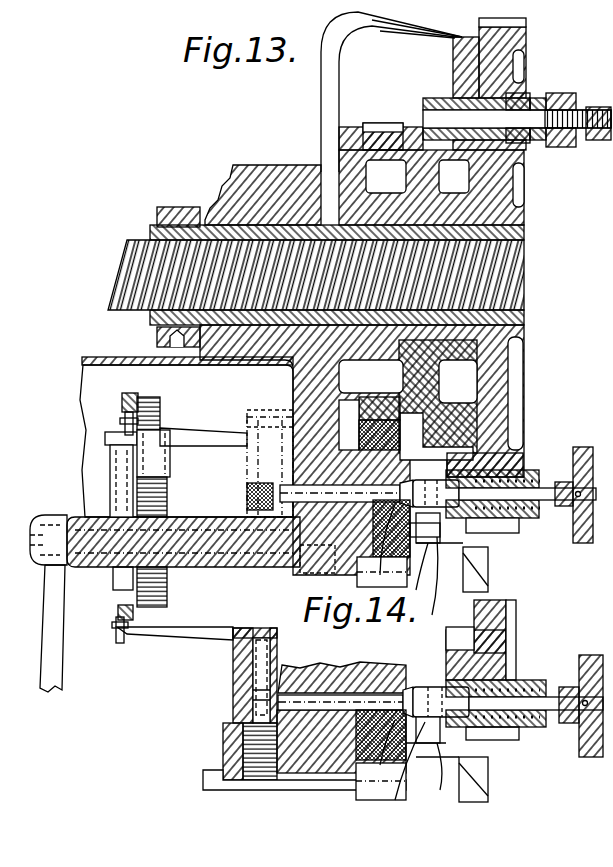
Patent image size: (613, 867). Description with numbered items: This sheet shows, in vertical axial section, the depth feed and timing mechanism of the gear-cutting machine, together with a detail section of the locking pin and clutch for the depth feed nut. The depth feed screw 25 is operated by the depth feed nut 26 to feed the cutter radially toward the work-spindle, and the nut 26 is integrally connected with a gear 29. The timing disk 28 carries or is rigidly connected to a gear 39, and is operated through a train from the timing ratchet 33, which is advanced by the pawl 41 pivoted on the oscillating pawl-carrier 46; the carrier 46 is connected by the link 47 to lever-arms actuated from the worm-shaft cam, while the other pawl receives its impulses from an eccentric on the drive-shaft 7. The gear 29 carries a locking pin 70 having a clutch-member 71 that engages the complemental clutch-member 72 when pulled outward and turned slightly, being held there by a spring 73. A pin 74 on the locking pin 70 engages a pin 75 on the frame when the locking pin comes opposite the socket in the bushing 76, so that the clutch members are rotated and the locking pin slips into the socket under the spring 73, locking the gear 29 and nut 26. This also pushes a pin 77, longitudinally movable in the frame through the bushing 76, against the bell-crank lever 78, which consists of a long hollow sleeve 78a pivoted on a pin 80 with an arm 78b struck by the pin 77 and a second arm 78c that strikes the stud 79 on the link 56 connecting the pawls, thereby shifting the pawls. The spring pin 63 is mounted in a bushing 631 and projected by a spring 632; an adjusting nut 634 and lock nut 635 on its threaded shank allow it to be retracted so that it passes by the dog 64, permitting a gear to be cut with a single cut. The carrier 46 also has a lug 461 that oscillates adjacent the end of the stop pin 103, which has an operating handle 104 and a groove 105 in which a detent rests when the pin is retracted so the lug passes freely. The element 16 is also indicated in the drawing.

In FIG. 13, the drive-shaft 7 is at (33, 554).
In FIG. 13, the link 16 is at (433, 561).
In FIG. 13, the depth feed screw 25 is at (420, 277).
In FIG. 13, the depth feed nut 26 is at (470, 226).
In FIG. 13, the timing disk 28 is at (488, 374).
In FIG. 13, the gear 29 is at (492, 452).
In FIG. 13, the timing ratchet 33 is at (167, 496).
In FIG. 13, the gear 39 is at (378, 127).
In FIG. 13, the pawl 41 is at (157, 472).
In FIG. 13, the pawl-carrier 46 is at (113, 481).
In FIG. 13, the link 47 is at (52, 596).
In FIG. 13, the link 56 is at (130, 400).
In FIG. 14, the link 56 is at (118, 613).
In FIG. 13, the spring pin 63 is at (468, 108).
In FIG. 13, the dog 64 is at (438, 113).
In FIG. 13, the locking pin 70 is at (486, 572).
In FIG. 14, the locking pin 70 is at (482, 765).
In FIG. 13, the clutch-member 71 is at (537, 486).
In FIG. 14, the clutch-member 71 is at (559, 684).
In FIG. 13, the complemental clutch-member 72 is at (528, 510).
In FIG. 14, the complemental clutch-member 72 is at (526, 727).
In FIG. 13, the spring 73 is at (486, 522).
In FIG. 14, the spring 73 is at (519, 678).
In FIG. 13, the pin 74 is at (422, 583).
In FIG. 14, the pin 74 is at (435, 768).
In FIG. 13, the pin 75 is at (425, 510).
In FIG. 14, the pin 75 is at (430, 718).
In FIG. 14, the bushing 76 is at (355, 782).
In FIG. 13, the pin 77 is at (323, 503).
In FIG. 13, the bell-crank lever 78 is at (253, 445).
In FIG. 14, the hollow sleeve 78a is at (243, 672).
In FIG. 14, the arm 78b is at (308, 688).
In FIG. 13, the second arm 78c is at (183, 424).
In FIG. 14, the second arm 78c is at (172, 630).
In FIG. 13, the pin or stud 79 is at (122, 431).
In FIG. 14, the pin or stud 79 is at (121, 643).
In FIG. 14, the pin 80 is at (262, 664).
In FIG. 13, the stop pin 103 is at (340, 578).
In FIG. 14, the stop pin 103 is at (203, 778).
In FIG. 14, the operating handle 104 is at (489, 800).
In FIG. 14, the groove 105 is at (335, 790).
In FIG. 13, the lug 461 is at (118, 582).
In FIG. 13, the bushing 631 is at (535, 112).
In FIG. 13, the spring 632 is at (540, 112).
In FIG. 13, the adjusting nut 634 is at (568, 148).
In FIG. 13, the lock nut 635 is at (598, 140).